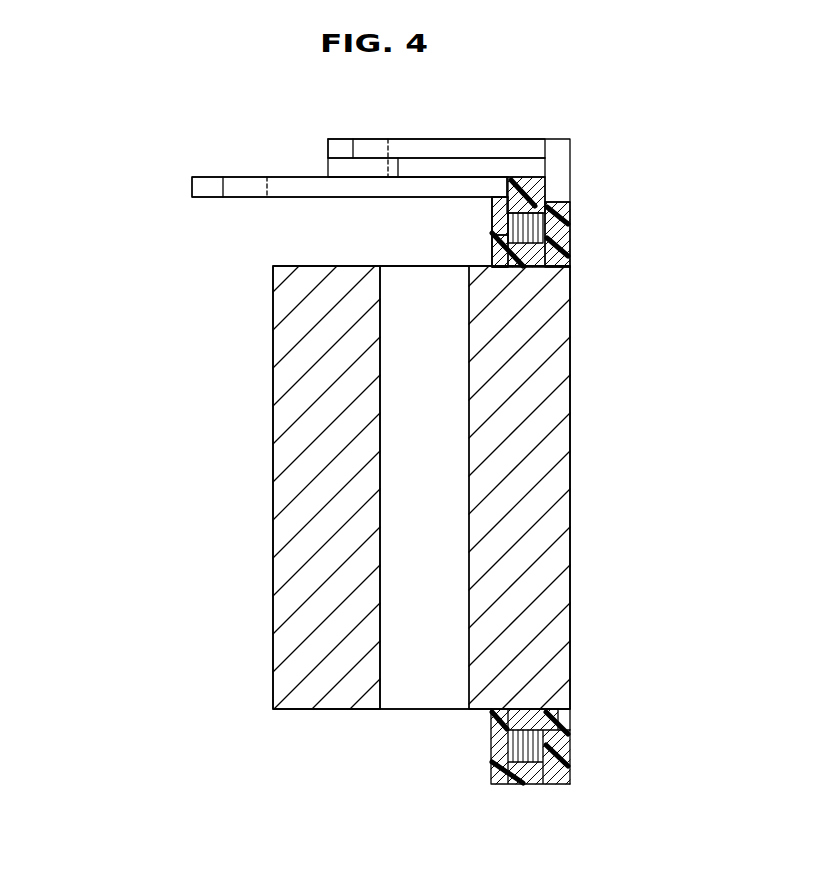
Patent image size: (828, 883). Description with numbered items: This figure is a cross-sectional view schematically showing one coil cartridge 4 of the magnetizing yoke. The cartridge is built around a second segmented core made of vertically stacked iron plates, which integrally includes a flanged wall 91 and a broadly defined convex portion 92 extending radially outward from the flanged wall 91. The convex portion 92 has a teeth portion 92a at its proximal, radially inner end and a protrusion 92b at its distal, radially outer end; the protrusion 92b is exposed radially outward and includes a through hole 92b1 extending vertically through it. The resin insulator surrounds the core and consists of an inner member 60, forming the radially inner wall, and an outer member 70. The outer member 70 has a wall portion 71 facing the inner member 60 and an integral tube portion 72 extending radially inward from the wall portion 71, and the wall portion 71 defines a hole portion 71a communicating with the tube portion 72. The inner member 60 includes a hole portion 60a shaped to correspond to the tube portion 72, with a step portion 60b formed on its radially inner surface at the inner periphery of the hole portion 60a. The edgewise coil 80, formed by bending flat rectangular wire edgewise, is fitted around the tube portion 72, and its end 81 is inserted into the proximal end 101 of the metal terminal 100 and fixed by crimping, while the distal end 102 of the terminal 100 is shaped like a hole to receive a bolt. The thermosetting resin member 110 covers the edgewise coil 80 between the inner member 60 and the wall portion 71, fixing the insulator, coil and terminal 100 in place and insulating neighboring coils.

The coil cartridge 4 is at (607, 141).
The terminal 100 is at (215, 177).
The proximal end of the terminal 101 is at (328, 150).
The distal end of the terminal 102 is at (192, 187).
The end of the edgewise coil 81 is at (353, 152).
The edgewise coil 80 is at (518, 180).
The resin member 110 is at (543, 139).
The inner member 60 is at (570, 225).
The hole portion of the inner member 60a is at (560, 269).
The step portion 60b is at (570, 262).
The outer member 70 is at (208, 210).
The wall portion of the outer member 71 is at (492, 214).
The tube portion 72 is at (492, 255).
The hole portion of the wall portion 71a is at (494, 264).
The flanged wall 91 is at (570, 480).
The convex portion 92 is at (177, 405).
The teeth portion 92a is at (520, 457).
The protrusion 92b is at (282, 497).
The through hole 92b1 is at (380, 690).